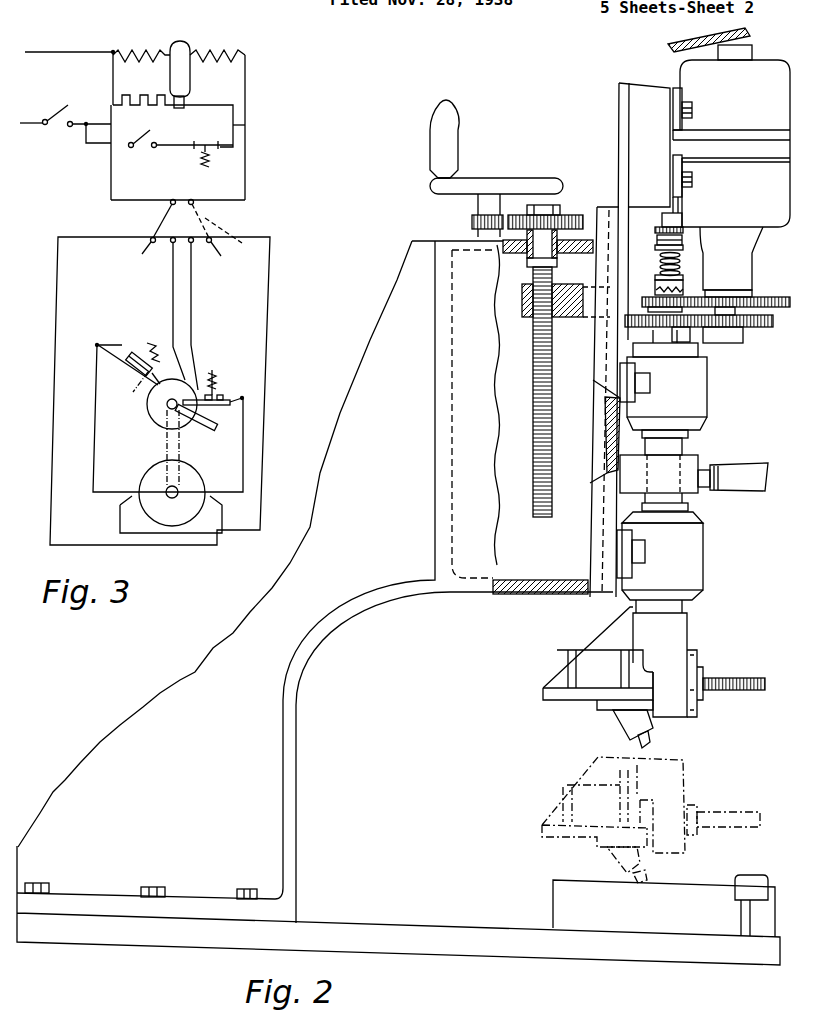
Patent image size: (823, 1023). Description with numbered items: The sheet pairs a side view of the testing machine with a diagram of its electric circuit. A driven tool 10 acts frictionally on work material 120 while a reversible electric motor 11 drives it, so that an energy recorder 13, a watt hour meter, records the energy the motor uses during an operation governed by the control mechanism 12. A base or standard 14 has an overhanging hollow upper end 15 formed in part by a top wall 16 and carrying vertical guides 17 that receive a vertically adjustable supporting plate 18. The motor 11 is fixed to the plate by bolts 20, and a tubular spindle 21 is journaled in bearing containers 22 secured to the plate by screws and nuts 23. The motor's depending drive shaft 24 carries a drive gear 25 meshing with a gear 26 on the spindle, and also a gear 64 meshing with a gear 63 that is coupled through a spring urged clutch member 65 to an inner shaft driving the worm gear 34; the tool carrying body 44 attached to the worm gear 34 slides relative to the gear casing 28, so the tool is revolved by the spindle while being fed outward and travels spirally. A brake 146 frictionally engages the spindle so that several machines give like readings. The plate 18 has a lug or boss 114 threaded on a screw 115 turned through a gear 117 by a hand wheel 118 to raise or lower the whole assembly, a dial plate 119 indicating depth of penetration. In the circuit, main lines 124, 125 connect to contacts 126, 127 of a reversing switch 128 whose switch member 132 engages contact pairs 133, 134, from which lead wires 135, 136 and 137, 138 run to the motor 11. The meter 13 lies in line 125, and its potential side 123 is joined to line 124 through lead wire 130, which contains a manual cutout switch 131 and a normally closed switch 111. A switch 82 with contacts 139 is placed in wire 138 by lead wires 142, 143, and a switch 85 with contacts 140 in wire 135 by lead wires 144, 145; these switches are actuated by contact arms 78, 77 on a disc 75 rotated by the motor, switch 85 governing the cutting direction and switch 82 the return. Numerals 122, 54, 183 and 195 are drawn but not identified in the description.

In FIG. 2, the driven tool 10 is at (650, 743).
In FIG. 2, the electric motor 11 is at (779, 61).
In FIG. 3, the electric motor 11 is at (207, 513).
In FIG. 3, the control mechanism 12 is at (158, 435).
In FIG. 3, the energy recorder 13 is at (230, 41).
In FIG. 2, the base or standard 14 is at (297, 782).
In FIG. 2, the upper end portion 15 is at (518, 597).
In FIG. 2, the top wall 16 is at (592, 205).
In FIG. 2, the vertical guides 17 is at (590, 517).
In FIG. 2, the supporting plate 18 is at (617, 118).
In FIG. 2, the bolts 20 is at (693, 109).
In FIG. 2, the spindle 21 is at (680, 448).
In FIG. 2, the bearing containers 22 is at (705, 394).
In FIG. 2, the screws and nuts 23 is at (650, 387).
In FIG. 2, the drive shaft 24 is at (730, 277).
In FIG. 2, the drive gear 25 is at (757, 333).
In FIG. 2, the gear 26 is at (673, 357).
In FIG. 2, the casing 28 is at (673, 663).
In FIG. 2, the worm gear 34 is at (743, 680).
In FIG. 2, the tool carrying body 44 is at (617, 720).
In FIG. 2, the bracket 54 is at (553, 668).
In FIG. 2, the gear 63 is at (685, 297).
In FIG. 2, the gear 64 is at (767, 297).
In FIG. 2, the clutch member 65 is at (658, 284).
In FIG. 3, the disc 75 is at (151, 447).
In FIG. 3, the contact arm 77 is at (157, 415).
In FIG. 3, the contact arm 78 is at (208, 417).
In FIG. 3, the control switch 82 is at (239, 381).
In FIG. 3, the switch 85 is at (134, 331).
In FIG. 3, the normally closed switch 111 is at (215, 153).
In FIG. 2, the lug or boss 114 is at (560, 318).
In FIG. 2, the threaded screw 115 is at (533, 367).
In FIG. 2, the gear 117 is at (472, 222).
In FIG. 2, the hand wheel 118 is at (473, 182).
In FIG. 2, the dial plate 119 is at (572, 212).
In FIG. 2, the work or material 120 is at (630, 928).
In FIG. 3, the lamp 122 is at (145, 50).
In FIG. 3, the potential side of the meter 123 is at (153, 108).
In FIG. 3, the main line 124 is at (33, 127).
In FIG. 3, the main line 125 is at (95, 52).
In FIG. 3, the contact 126 is at (172, 200).
In FIG. 3, the contact 127 is at (193, 202).
In FIG. 3, the reversing switch 128 is at (226, 222).
In FIG. 3, the lead wire 130 is at (247, 125).
In FIG. 3, the manually operable switch 131 is at (138, 152).
In FIG. 3, the switch member 132 is at (165, 221).
In FIG. 3, the contacts 133 is at (149, 256).
In FIG. 3, the contacts 134 is at (220, 256).
In FIG. 3, the lead wire 135 is at (96, 417).
In FIG. 3, the lead wire 136 is at (60, 292).
In FIG. 3, the lead wire 137 is at (270, 302).
In FIG. 3, the lead wire 138 is at (203, 292).
In FIG. 3, the spaced contacts 139 is at (211, 370).
In FIG. 3, the spaced contacts 140 is at (140, 354).
In FIG. 3, the lead wire 142 is at (244, 399).
In FIG. 3, the lead wire 143 is at (198, 355).
In FIG. 3, the lead wire 144 is at (172, 362).
In FIG. 3, the lead wire 145 is at (126, 388).
In FIG. 2, the brake 146 is at (707, 487).
In FIG. 3, the spring 183 is at (224, 377).
In FIG. 3, the conductor 195 is at (173, 297).